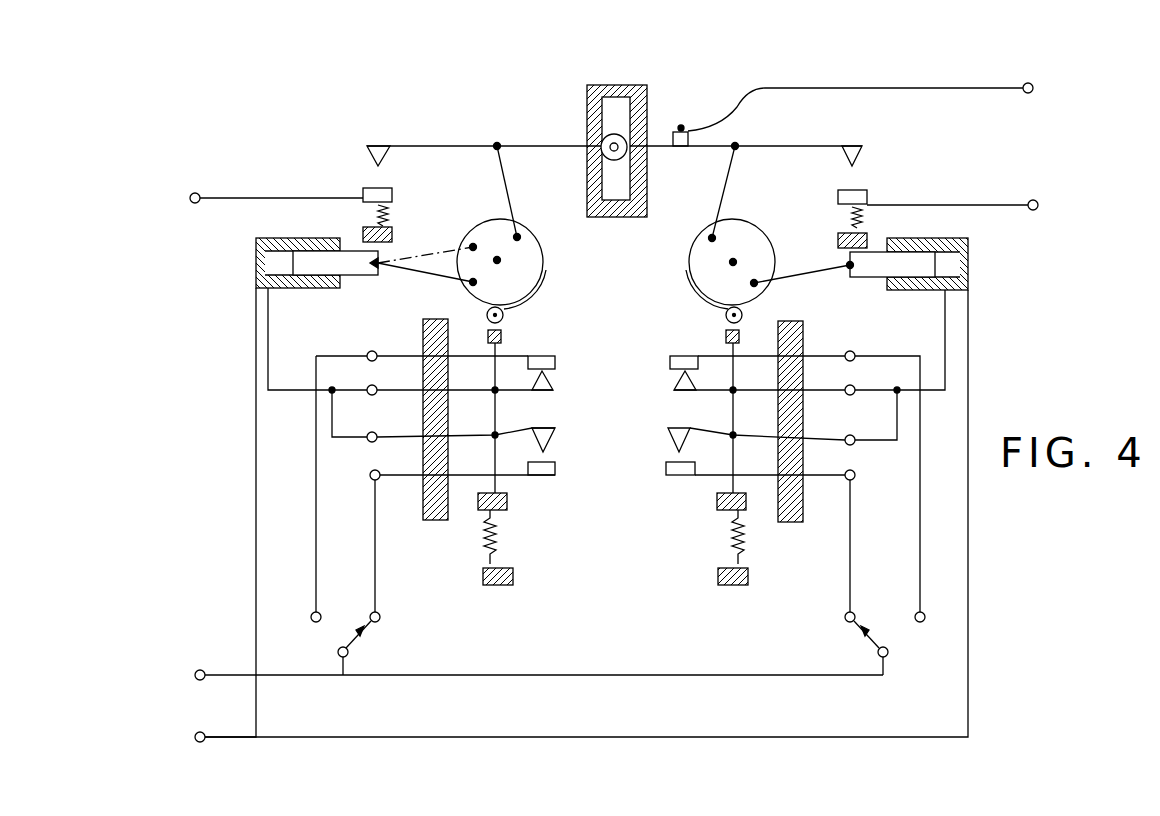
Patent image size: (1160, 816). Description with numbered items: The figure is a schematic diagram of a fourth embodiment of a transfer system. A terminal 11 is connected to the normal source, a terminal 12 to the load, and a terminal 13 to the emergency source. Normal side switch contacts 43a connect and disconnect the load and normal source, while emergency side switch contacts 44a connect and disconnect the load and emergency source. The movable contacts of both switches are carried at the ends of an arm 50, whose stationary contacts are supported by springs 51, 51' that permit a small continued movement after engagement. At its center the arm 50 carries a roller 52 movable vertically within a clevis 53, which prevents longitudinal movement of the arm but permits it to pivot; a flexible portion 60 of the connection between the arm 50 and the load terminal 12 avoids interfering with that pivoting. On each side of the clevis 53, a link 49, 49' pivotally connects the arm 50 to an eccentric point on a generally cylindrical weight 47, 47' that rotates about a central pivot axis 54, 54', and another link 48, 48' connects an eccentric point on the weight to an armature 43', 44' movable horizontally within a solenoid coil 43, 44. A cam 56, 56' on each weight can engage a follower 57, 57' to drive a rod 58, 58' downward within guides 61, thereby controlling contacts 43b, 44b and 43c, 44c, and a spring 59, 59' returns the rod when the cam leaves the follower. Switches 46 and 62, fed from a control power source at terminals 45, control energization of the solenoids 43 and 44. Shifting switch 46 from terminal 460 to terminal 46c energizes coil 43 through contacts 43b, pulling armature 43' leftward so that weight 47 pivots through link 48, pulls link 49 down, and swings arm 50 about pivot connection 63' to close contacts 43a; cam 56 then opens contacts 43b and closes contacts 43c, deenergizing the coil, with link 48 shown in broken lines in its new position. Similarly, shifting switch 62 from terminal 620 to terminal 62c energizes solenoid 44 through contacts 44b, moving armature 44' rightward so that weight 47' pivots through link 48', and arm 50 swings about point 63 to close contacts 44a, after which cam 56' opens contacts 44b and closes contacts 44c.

The terminal 11 is at (195, 204).
The terminal 12 is at (1026, 84).
The terminal 13 is at (1034, 211).
The solenoid coil 43 is at (271, 274).
The armature 43' is at (338, 280).
The normal side switch contacts 43a is at (358, 158).
The contacts 43b is at (556, 380).
The contacts 43c is at (556, 453).
The solenoid coil 44 is at (944, 264).
The armature 44' is at (891, 284).
The emergency side switch contacts 44a is at (862, 176).
The contacts 44b is at (672, 378).
The contacts 44c is at (668, 455).
The terminals 45 is at (200, 732).
The switch 46 is at (357, 634).
The terminal 46c is at (311, 617).
The terminal 460 is at (380, 620).
The weight 47 is at (519, 262).
The weight 47' is at (753, 262).
The link 48 is at (425, 275).
The link 48' is at (802, 291).
The link 49 is at (478, 191).
The link 49' is at (757, 192).
The arm 50 is at (532, 145).
The spring 51 is at (404, 215).
The spring 51' is at (825, 219).
The roller 52 is at (592, 166).
The clevis 53 is at (647, 112).
The central pivot axis 54 is at (513, 277).
The central pivot axis 54' is at (718, 280).
The cam 56 is at (548, 289).
The cam 56' is at (674, 289).
The follower 57 is at (530, 312).
The follower 57' is at (691, 312).
The rod 58 is at (526, 418).
The rod 58' is at (694, 418).
The spring 59 is at (459, 537).
The spring 59' is at (777, 537).
The flexible portion 60 is at (736, 105).
The guides 61 is at (501, 337).
The switch 62 is at (871, 636).
The terminal 62c is at (925, 617).
The terminal 620 is at (845, 619).
The pivot connection 63 is at (467, 126).
The pivot connection 63' is at (770, 126).